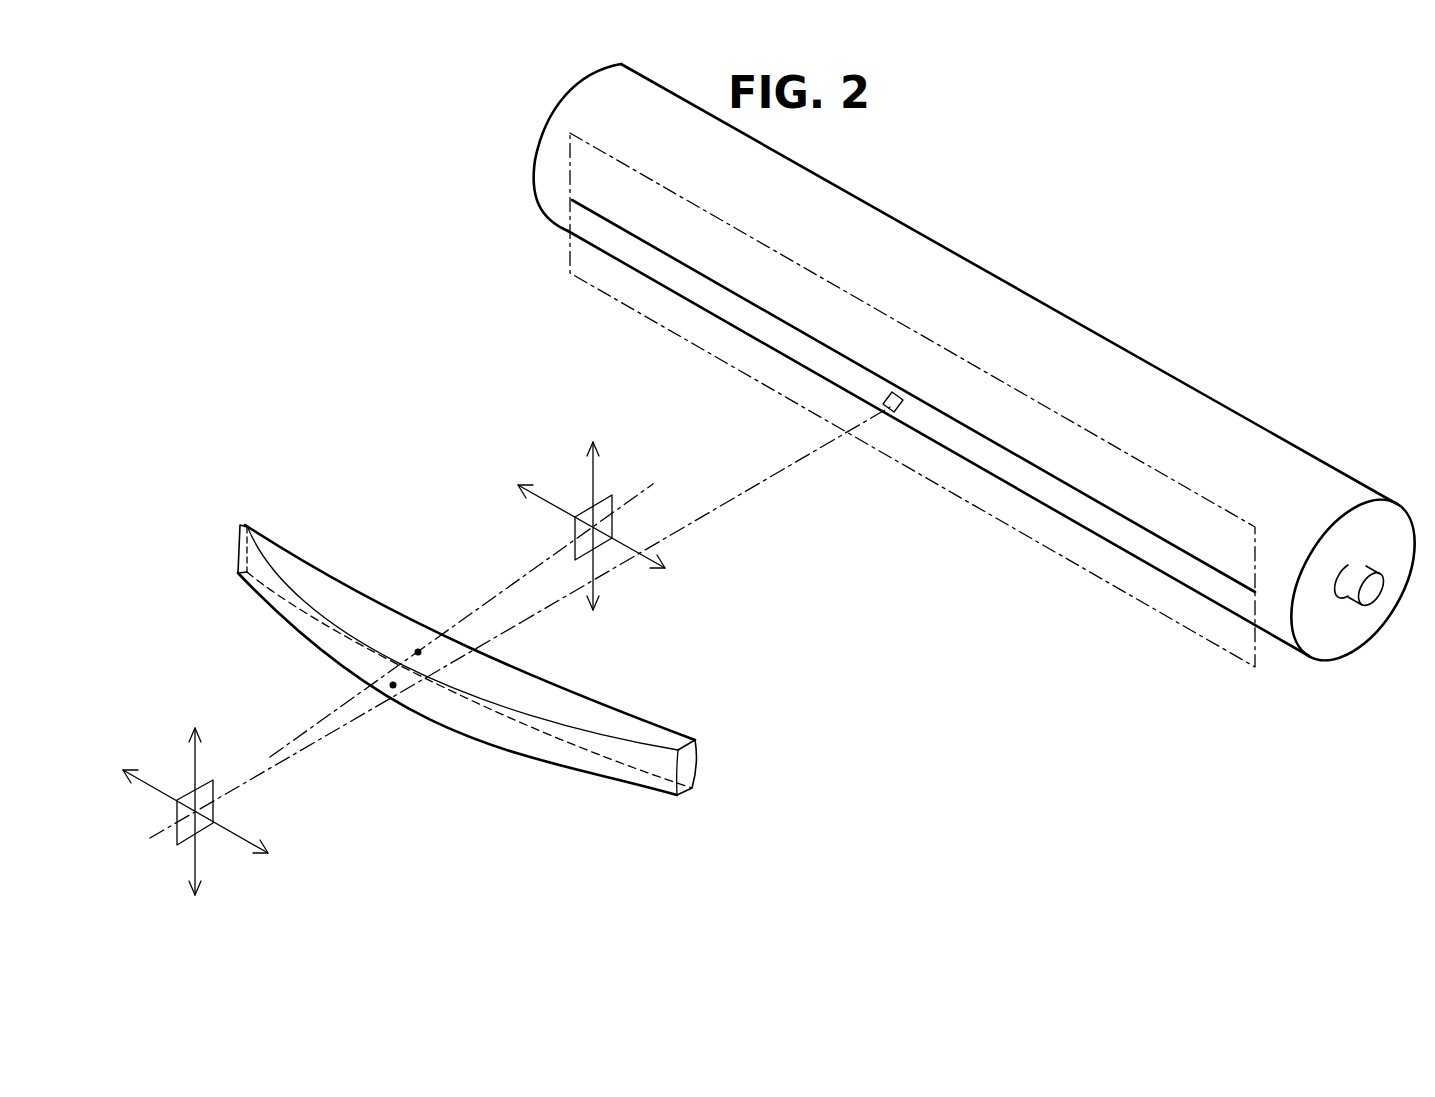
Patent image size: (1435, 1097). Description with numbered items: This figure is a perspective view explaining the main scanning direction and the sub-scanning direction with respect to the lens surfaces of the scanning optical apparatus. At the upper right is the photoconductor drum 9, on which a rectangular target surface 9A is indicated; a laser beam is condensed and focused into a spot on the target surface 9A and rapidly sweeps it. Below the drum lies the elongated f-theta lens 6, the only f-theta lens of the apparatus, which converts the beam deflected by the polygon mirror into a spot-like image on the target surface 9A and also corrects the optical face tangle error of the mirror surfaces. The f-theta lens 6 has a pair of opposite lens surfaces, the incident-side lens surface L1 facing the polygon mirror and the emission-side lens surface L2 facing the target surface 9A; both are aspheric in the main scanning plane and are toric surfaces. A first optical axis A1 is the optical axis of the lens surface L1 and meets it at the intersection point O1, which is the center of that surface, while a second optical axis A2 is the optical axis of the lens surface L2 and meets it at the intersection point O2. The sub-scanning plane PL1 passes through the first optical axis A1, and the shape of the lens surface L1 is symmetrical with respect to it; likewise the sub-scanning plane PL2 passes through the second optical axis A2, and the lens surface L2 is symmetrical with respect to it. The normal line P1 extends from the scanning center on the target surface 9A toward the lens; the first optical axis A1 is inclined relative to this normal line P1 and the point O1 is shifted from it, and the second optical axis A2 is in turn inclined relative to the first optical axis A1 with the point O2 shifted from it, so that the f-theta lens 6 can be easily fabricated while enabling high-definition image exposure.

The photoconductor drum 9 is at (1190, 398).
The target surface 9A is at (606, 177).
The f-theta lens 6 is at (504, 673).
The incident-side lens surface L1 is at (512, 733).
The emission-side lens surface L2 is at (604, 717).
The intersection point O1 is at (393, 690).
The intersection point O2 is at (418, 648).
The first optical axis A1 is at (494, 630).
The second optical axis A2 is at (535, 567).
The normal line P1 is at (743, 495).
The sub-scanning plane PL1 is at (212, 778).
The sub-scanning plane PL2 is at (612, 494).